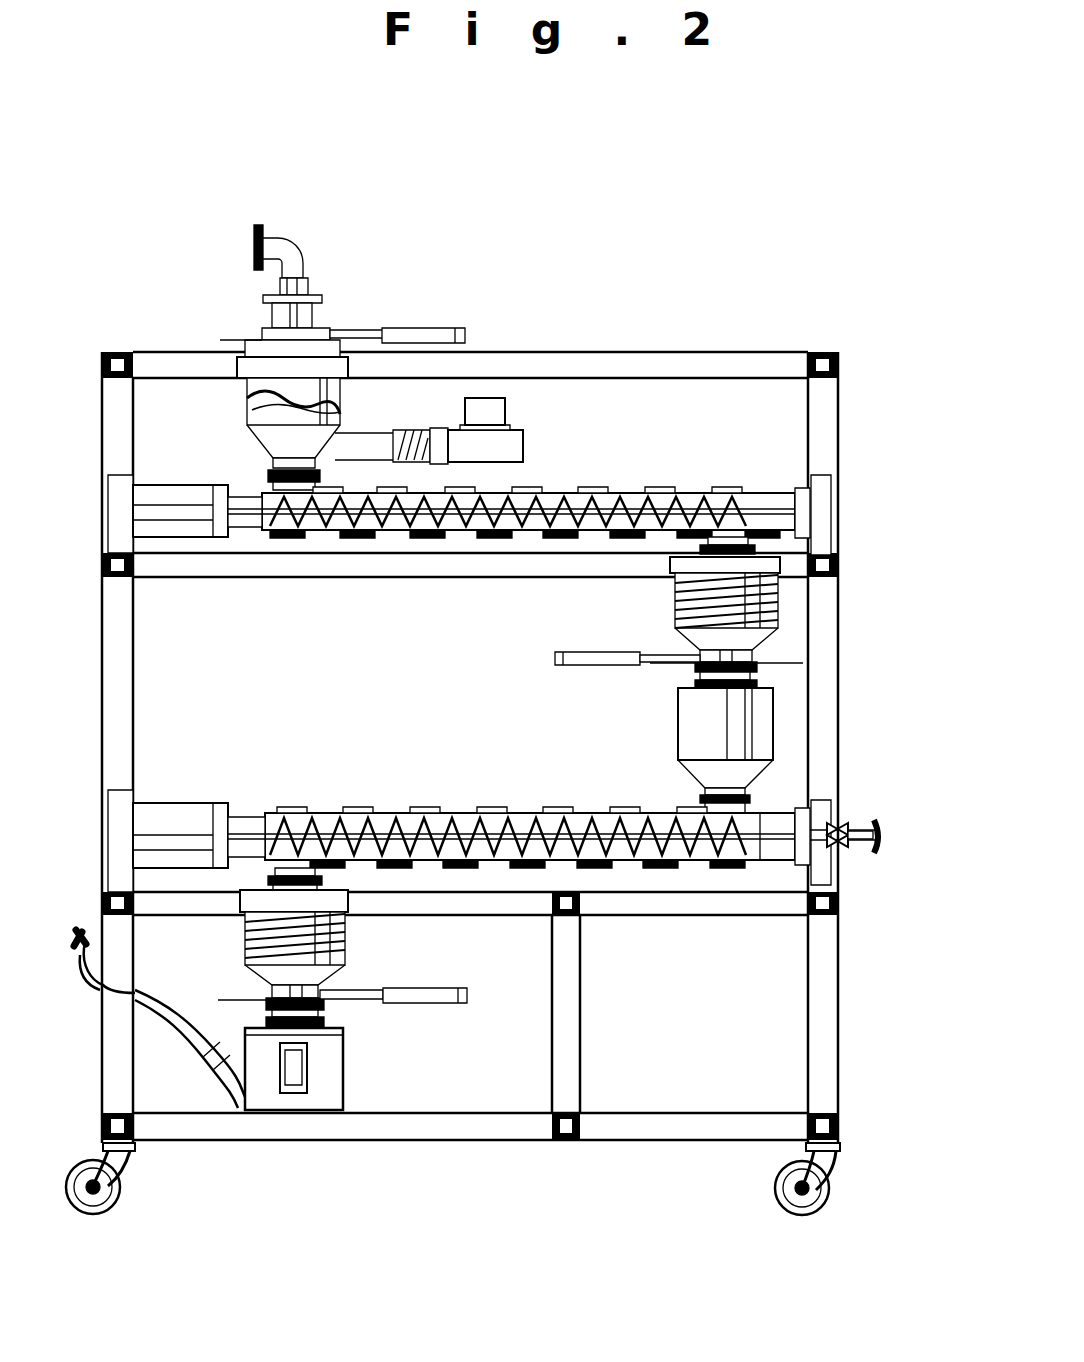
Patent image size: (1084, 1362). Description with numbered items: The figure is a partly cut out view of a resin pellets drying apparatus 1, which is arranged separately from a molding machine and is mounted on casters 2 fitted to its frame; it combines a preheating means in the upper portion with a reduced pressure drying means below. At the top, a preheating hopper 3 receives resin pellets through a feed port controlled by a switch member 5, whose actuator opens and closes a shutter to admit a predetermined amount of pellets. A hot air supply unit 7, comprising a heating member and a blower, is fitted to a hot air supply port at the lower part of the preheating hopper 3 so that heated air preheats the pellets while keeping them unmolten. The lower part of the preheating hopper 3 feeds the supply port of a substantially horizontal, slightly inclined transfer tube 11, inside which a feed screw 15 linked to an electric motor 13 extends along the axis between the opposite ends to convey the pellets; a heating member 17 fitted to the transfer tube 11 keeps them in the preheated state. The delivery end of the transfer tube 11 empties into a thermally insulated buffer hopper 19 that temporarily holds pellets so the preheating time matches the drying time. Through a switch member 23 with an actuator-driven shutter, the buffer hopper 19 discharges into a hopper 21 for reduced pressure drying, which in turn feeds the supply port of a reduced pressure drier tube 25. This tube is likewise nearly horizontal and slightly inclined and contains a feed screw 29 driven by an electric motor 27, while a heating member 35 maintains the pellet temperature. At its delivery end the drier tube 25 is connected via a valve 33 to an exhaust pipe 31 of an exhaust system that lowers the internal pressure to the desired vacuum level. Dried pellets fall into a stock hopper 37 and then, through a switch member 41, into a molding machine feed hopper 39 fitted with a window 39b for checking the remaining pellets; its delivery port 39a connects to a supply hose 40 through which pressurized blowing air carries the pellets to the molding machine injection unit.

The resin pellets drying apparatus 1 is at (565, 332).
The casters 2 is at (790, 1186).
The preheating hopper 3 is at (262, 425).
The switch member 5 is at (390, 328).
The hot air supply unit 7 is at (487, 447).
The transfer tube 11 is at (445, 532).
The electric motor 13 is at (183, 515).
The feed screw 15 is at (495, 532).
The heating member 17 is at (653, 493).
The buffer hopper 19 is at (705, 608).
The hopper for reduced pressure drying 21 is at (700, 750).
The switch member 23 is at (603, 662).
The reduced pressure drier tube 25 is at (455, 810).
The electric motor 27 is at (162, 830).
The feed screw 29 is at (533, 810).
The exhaust pipe 31 is at (858, 845).
The valve 33 is at (846, 838).
The heating member 35 is at (412, 810).
The stock hopper 37 is at (243, 940).
The molding machine feed hopper 39 is at (322, 1072).
The delivery port 39a is at (225, 1060).
The window 39b is at (288, 1088).
The supply hose 40 is at (88, 972).
The switch member 41 is at (403, 1003).